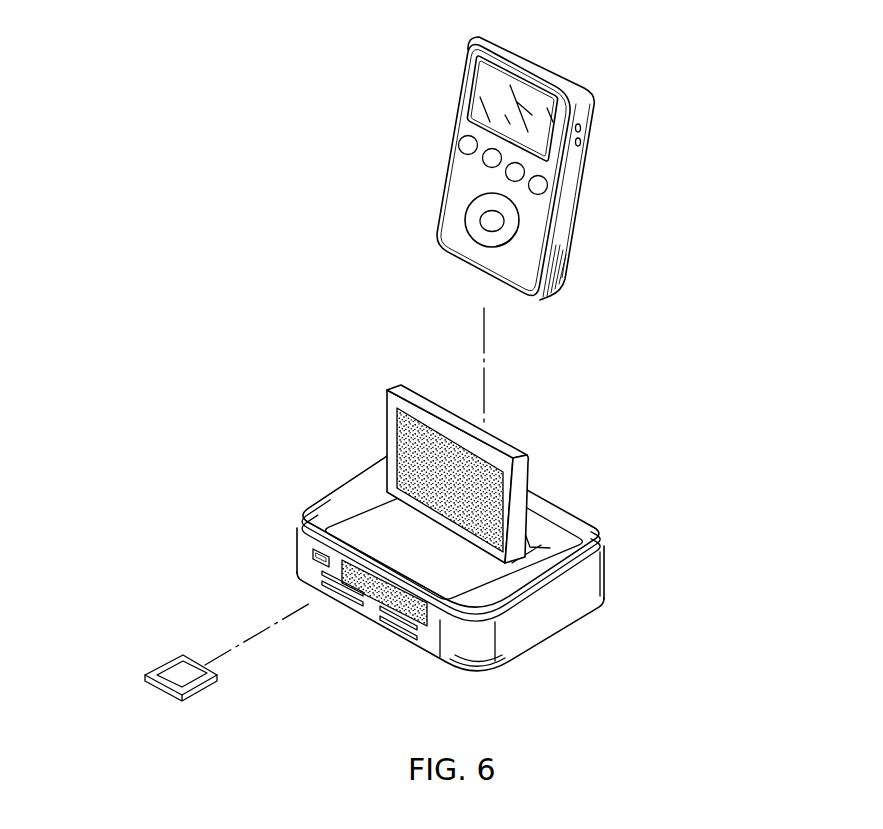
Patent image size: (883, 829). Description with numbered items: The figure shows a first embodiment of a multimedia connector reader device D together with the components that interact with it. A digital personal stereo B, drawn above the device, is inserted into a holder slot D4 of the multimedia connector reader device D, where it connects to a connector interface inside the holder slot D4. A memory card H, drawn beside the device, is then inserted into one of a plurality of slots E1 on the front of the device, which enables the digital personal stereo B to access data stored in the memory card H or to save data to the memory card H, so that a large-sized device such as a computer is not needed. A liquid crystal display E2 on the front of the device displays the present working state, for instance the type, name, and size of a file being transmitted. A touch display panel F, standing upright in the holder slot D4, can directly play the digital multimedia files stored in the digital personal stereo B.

The digital personal stereo B is at (625, 185).
The touch display panel F is at (403, 387).
The multimedia connector reader device D is at (489, 568).
The holder slot D4 is at (590, 534).
The slots E1 is at (328, 590).
The liquid crystal display E2 is at (438, 617).
The memory card H is at (183, 653).